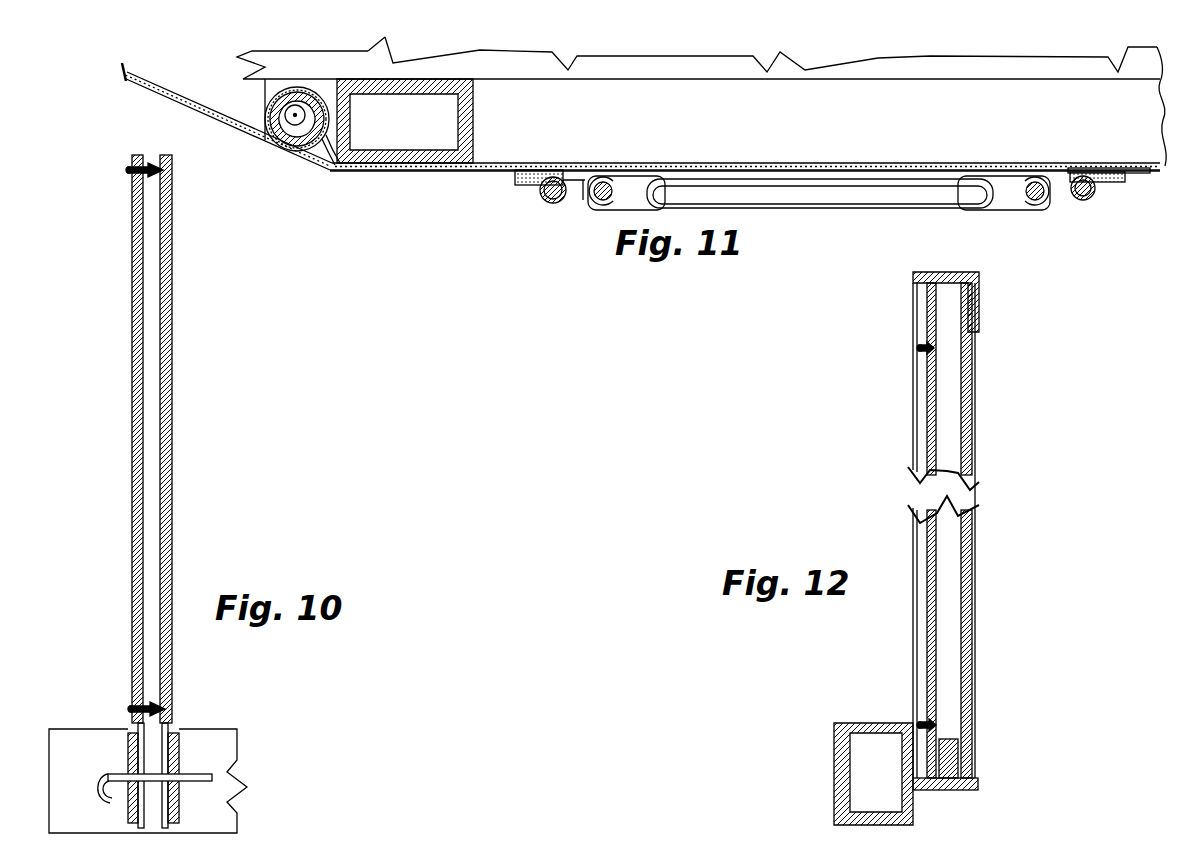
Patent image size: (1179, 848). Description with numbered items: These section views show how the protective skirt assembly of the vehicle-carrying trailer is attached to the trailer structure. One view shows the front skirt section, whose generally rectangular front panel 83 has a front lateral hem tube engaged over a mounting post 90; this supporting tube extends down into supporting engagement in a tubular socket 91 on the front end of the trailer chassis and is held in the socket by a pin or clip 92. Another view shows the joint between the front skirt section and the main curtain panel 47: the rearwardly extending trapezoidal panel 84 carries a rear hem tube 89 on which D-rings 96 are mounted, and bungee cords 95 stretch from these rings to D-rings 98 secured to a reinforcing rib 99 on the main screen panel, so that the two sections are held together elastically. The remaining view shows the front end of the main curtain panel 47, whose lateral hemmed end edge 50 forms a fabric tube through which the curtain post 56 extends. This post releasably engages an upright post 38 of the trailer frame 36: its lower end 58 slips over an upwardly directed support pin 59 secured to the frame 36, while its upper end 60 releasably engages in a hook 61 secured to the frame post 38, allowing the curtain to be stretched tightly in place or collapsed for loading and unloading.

In FIG. 11, the frame 36 is at (485, 66).
In FIG. 12, the frame 36 is at (857, 723).
In FIG. 11, the upright posts 38 is at (478, 125).
In FIG. 11, the curtain panel 47 is at (765, 168).
In FIG. 12, the curtain panel 47 is at (976, 656).
In FIG. 11, the lateral hemmed end edge 50 is at (265, 108).
In FIG. 11, the curtain post 56 is at (292, 130).
In FIG. 12, the curtain post 56 is at (968, 397).
In FIG. 12, the lower end 58 is at (963, 757).
In FIG. 11, the support pin 59 is at (288, 124).
In FIG. 12, the support pin 59 is at (962, 740).
In FIG. 12, the upper end 60 is at (930, 303).
In FIG. 12, the hook 61 is at (975, 316).
In FIG. 10, the front panel 83 is at (172, 321).
In FIG. 11, the trapezoidal panel 84 is at (425, 178).
In FIG. 11, the hem tube 89 is at (523, 185).
In FIG. 10, the mounting post 90 is at (172, 678).
In FIG. 10, the tubular socket 91 is at (180, 745).
In FIG. 10, the pin or clip 92 is at (195, 778).
In FIG. 11, the bungee cords 95 is at (853, 190).
In FIG. 11, the D-rings 96 is at (577, 190).
In FIG. 11, the D-rings 98 is at (1057, 192).
In FIG. 11, the reinforcing rib 99 is at (1130, 177).